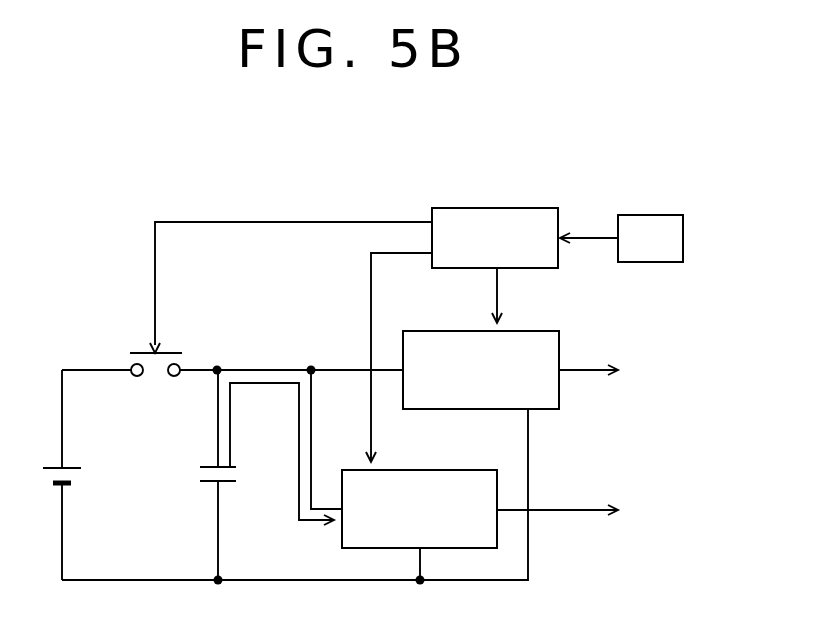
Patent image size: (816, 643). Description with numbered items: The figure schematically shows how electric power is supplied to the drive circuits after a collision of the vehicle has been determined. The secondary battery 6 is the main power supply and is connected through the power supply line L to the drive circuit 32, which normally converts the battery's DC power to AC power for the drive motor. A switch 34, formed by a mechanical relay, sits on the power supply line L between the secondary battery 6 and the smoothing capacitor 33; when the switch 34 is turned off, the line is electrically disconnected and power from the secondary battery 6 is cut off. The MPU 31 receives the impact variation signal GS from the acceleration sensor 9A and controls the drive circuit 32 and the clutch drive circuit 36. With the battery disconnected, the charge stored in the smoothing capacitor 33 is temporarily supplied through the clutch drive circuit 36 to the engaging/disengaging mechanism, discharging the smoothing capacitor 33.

The MPU 31 is at (527, 208).
The acceleration sensor 9A is at (650, 215).
The drive circuit 32 is at (533, 331).
The clutch drive circuit 36 is at (467, 470).
The smoothing capacitor 33 is at (206, 485).
The secondary battery 6 is at (55, 468).
The power supply line L is at (87, 370).
The switch 34 is at (167, 353).